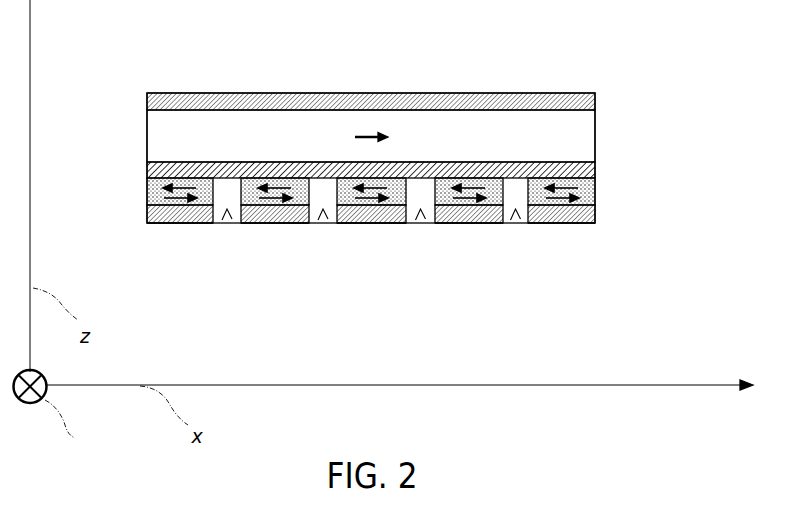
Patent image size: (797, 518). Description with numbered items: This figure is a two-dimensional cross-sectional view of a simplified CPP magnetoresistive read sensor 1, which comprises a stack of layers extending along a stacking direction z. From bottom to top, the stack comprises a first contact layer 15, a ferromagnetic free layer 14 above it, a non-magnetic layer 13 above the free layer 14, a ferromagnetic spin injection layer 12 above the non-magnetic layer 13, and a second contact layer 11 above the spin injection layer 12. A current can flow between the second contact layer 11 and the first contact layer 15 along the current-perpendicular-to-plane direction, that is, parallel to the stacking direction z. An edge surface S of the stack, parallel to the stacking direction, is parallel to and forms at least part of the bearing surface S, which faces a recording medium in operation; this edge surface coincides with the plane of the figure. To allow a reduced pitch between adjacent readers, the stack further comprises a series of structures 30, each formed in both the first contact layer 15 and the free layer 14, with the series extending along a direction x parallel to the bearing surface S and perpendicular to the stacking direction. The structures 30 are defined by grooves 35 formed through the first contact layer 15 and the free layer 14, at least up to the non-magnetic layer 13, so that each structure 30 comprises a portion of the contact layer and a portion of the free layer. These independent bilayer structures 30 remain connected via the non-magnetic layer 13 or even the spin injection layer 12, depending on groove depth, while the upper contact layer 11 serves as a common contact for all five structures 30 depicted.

The sensor 1 is at (553, 272).
The second contact layer 11 is at (147, 102).
The spin injection layer 12 is at (147, 140).
The non-magnetic layer 13 is at (596, 168).
The free layer 14 is at (147, 193).
The first contact layer 15 is at (147, 213).
The structures 30 is at (555, 226).
The grooves 35 is at (510, 225).
The edge surface / bearing surface S is at (251, 142).